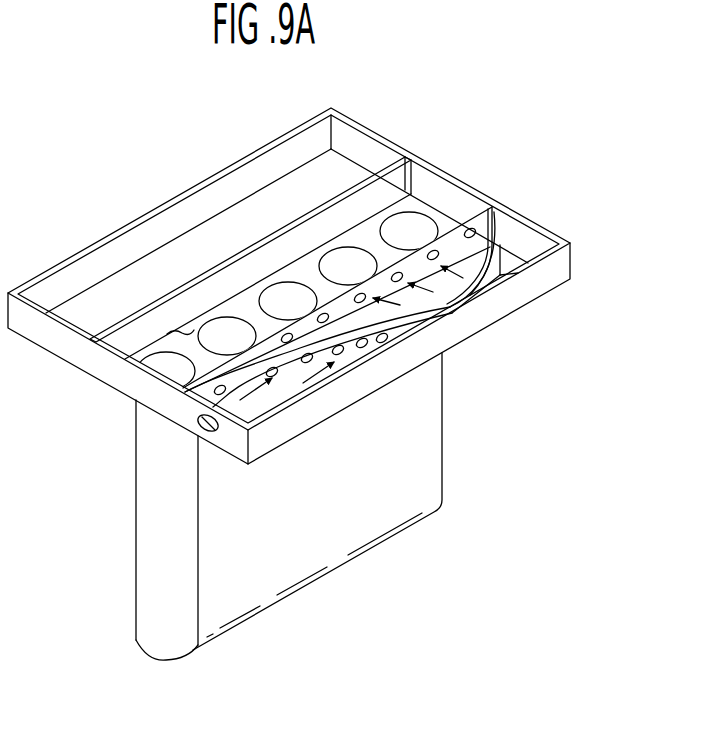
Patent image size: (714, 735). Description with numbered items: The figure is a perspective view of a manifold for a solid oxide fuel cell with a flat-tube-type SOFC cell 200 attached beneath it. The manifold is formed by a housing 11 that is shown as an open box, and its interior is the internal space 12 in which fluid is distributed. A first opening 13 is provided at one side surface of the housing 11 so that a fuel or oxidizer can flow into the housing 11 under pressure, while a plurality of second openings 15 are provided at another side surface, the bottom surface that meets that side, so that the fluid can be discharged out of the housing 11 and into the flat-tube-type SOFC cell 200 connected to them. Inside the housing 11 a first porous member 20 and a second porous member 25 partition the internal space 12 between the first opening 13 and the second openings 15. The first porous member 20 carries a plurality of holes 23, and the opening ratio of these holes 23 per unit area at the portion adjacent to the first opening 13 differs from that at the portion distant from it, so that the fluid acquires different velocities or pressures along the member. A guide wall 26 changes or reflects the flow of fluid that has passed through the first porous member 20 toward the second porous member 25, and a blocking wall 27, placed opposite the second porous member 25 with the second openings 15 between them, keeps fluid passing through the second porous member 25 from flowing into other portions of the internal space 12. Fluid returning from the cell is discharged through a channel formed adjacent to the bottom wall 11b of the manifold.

The housing 11 is at (360, 122).
The bottom wall 11b is at (412, 205).
The internal space 12 is at (181, 330).
The first opening 13 is at (201, 433).
The second openings 15 is at (165, 364).
The first porous member 20 is at (397, 322).
The holes 23 is at (340, 352).
The second porous member 25 is at (475, 222).
The guide wall 26 is at (517, 273).
The blocking wall 27 is at (388, 177).
The flat-tube-type SOFC cell 200 is at (425, 499).